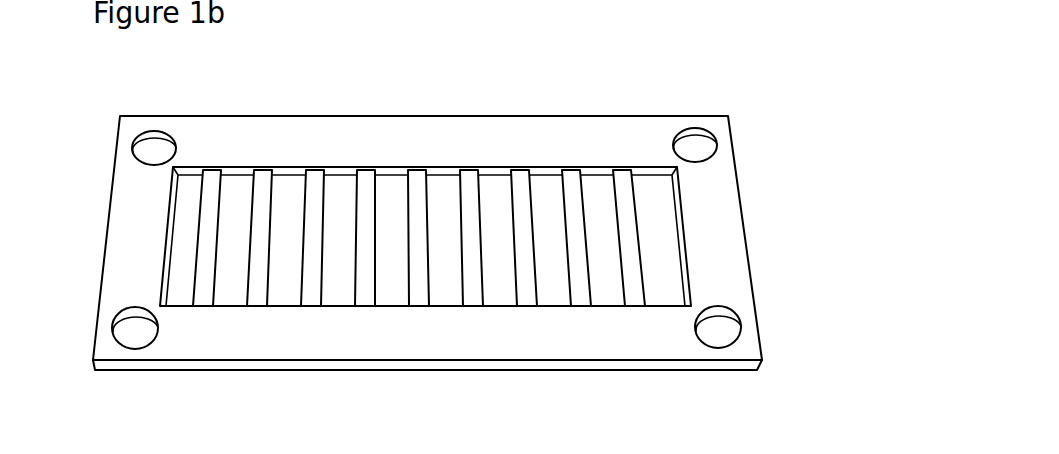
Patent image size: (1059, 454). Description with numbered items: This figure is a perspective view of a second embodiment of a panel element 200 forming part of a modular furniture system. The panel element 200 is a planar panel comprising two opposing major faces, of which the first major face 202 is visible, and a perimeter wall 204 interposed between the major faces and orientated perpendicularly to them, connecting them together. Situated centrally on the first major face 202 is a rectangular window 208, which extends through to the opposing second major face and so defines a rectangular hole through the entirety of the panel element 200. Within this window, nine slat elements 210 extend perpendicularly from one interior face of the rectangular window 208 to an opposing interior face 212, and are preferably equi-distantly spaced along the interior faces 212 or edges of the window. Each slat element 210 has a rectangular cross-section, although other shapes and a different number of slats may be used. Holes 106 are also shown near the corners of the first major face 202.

The panel element 200 is at (447, 226).
The first major face 202 is at (598, 135).
The perimeter wall 204 is at (718, 368).
The mounting holes 106 is at (157, 145).
The rectangular window 208 is at (498, 243).
The slat elements 210 is at (418, 283).
The interior face of the rectangular window 212 is at (499, 181).